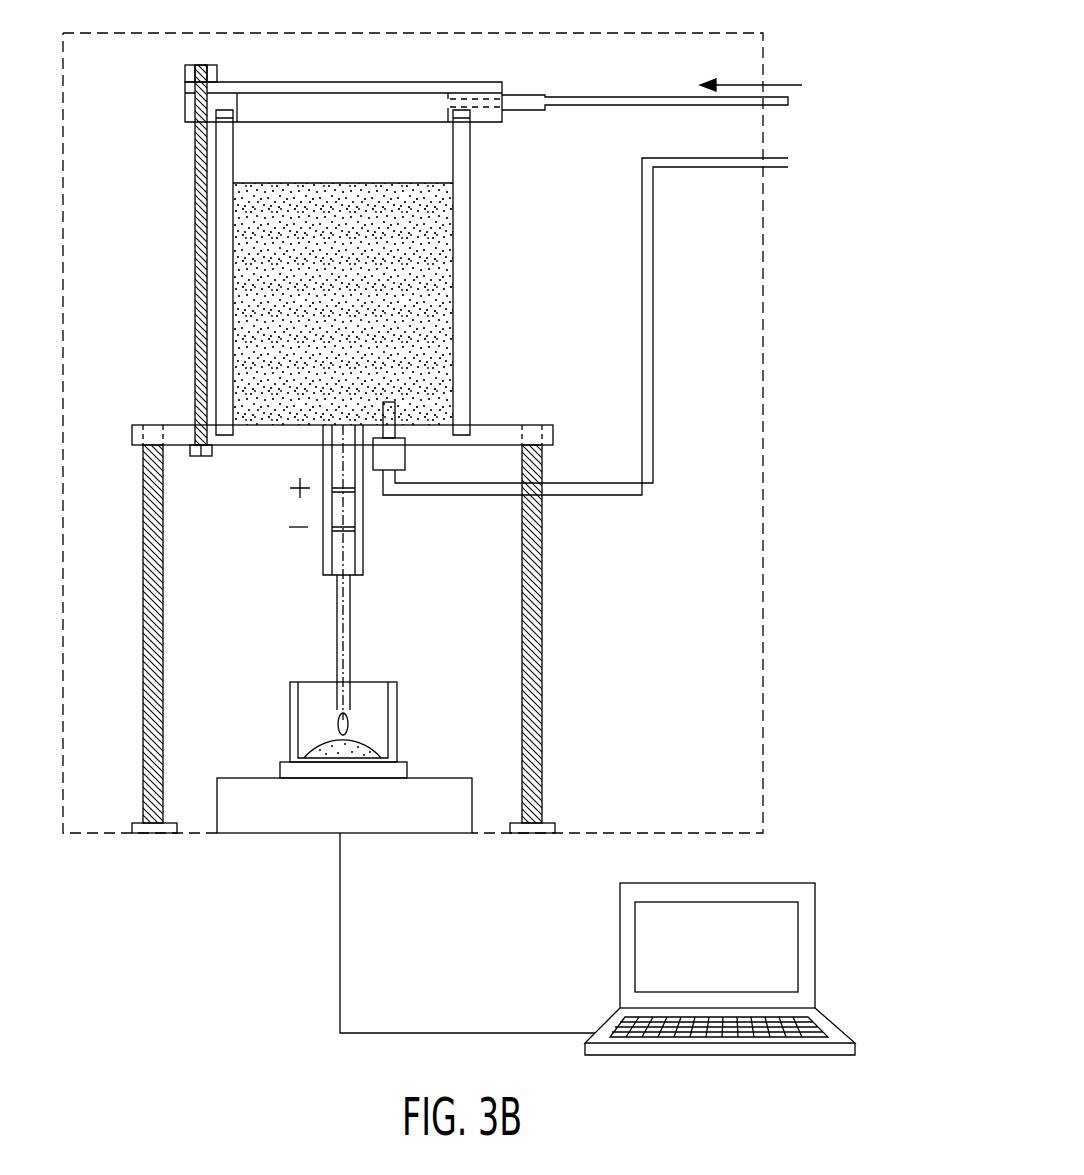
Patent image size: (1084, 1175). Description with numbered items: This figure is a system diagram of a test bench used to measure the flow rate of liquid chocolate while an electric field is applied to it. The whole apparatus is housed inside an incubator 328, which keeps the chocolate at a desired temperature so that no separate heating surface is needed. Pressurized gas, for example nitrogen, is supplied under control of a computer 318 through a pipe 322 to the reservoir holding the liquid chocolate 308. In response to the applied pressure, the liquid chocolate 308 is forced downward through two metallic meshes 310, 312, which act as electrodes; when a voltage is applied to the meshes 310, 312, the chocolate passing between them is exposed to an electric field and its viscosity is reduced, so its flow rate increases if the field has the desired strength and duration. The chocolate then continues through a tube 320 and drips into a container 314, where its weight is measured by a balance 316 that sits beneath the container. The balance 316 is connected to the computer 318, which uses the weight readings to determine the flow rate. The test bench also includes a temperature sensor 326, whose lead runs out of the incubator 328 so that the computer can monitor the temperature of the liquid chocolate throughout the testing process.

The liquid chocolate 308 is at (432, 290).
The metallic mesh 310 is at (300, 488).
The metallic mesh 312 is at (298, 527).
The container 314 is at (397, 720).
The balance 316 is at (248, 785).
The computer 318 is at (806, 883).
The tube 320 is at (345, 635).
The pipe 322 is at (788, 101).
The temperature sensor 326 is at (788, 167).
The incubator 328 is at (673, 813).